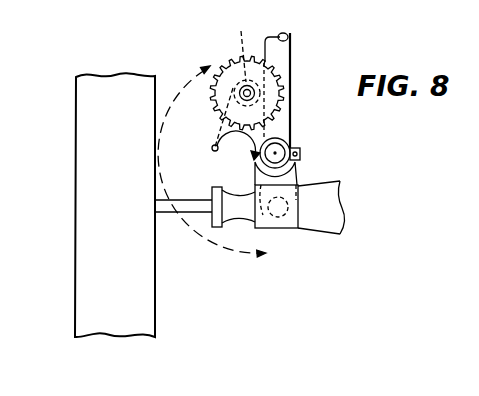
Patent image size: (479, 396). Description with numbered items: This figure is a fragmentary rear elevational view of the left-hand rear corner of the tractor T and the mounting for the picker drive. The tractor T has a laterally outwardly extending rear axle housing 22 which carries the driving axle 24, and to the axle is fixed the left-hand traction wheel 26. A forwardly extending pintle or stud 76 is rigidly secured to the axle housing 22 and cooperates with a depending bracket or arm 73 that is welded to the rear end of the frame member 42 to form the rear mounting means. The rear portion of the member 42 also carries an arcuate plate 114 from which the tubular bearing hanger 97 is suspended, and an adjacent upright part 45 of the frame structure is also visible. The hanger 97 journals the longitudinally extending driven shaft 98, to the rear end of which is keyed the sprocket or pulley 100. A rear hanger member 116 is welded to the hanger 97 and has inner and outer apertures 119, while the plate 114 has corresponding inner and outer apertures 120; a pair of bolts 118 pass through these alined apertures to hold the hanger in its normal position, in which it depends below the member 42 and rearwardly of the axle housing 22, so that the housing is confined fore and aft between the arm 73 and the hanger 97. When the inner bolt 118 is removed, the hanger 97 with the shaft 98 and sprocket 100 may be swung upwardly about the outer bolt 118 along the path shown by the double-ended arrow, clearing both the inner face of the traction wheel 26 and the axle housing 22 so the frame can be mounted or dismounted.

The traction wheel 26 is at (87, 187).
The driving axle 24 is at (166, 211).
The rear axle housing 22 is at (322, 232).
The pintle 76 is at (284, 207).
The bracket 73 is at (297, 179).
The member 42 is at (287, 142).
The apertures 120 is at (297, 149).
The arcuate plate 114 is at (302, 156).
The frame 45 is at (289, 36).
The sprocket 100 is at (285, 89).
The driven shaft 98 is at (253, 91).
The bearing hanger 97 is at (240, 46).
The rear hanger member 116 is at (214, 131).
The apertures 119 is at (212, 149).
The bolts 118 is at (252, 158).
The tractor T is at (346, 186).